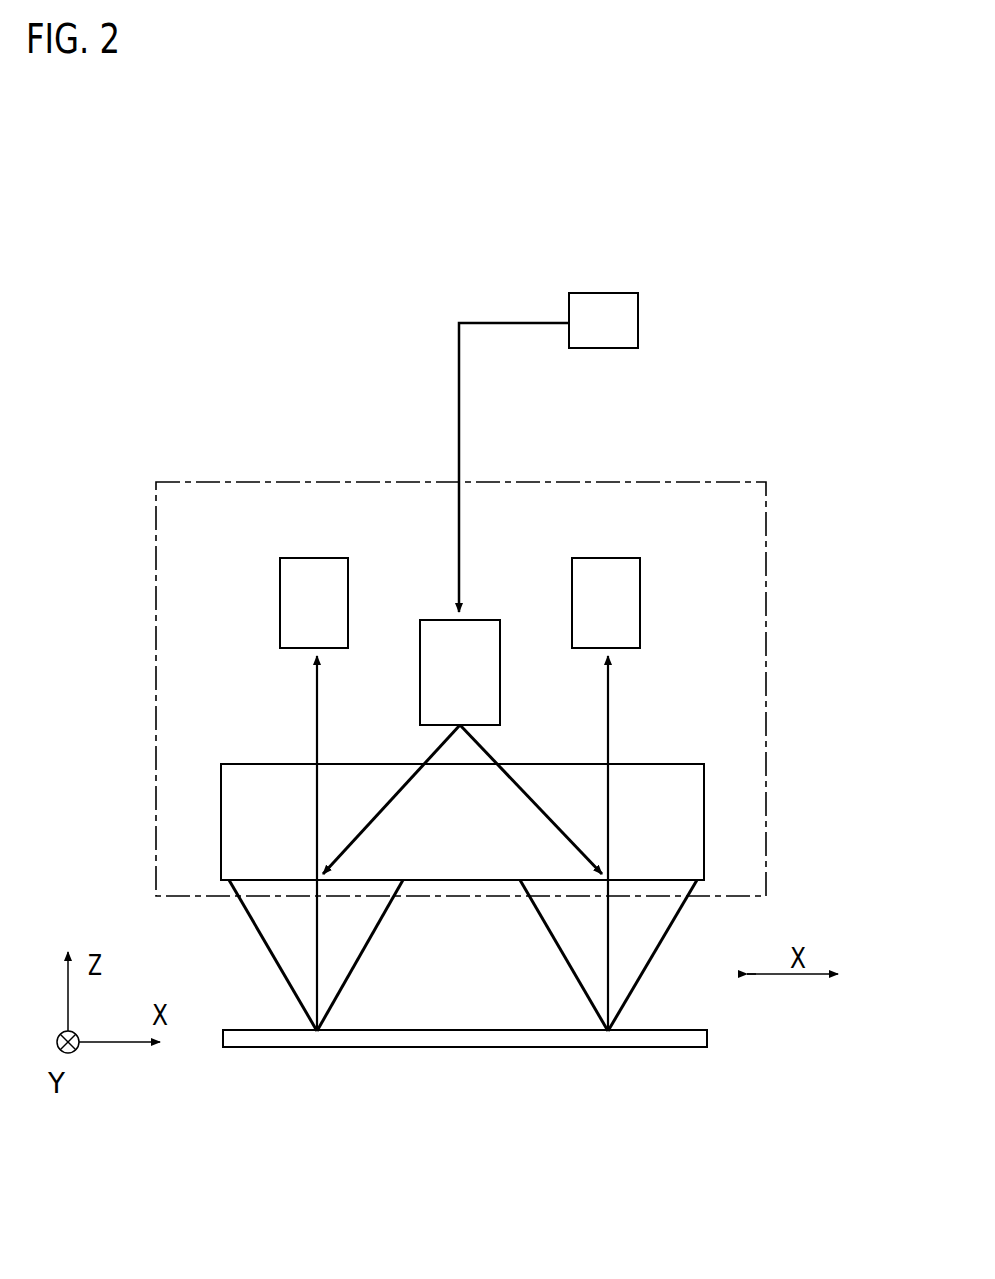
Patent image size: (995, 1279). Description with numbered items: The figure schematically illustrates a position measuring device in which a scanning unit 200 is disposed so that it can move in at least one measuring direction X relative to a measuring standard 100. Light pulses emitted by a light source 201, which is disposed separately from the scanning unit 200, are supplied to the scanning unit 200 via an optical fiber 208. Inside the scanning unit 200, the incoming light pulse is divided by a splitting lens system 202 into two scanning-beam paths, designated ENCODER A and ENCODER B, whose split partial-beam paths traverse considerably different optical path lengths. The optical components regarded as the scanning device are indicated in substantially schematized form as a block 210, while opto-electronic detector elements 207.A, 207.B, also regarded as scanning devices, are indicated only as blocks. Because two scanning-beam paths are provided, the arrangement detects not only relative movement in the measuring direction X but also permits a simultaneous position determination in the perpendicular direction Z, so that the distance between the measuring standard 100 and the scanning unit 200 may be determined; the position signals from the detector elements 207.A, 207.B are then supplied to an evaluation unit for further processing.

The measuring standard 100 is at (673, 1037).
The scanning unit 200 is at (780, 804).
The light source 201 is at (600, 313).
The splitting lens system 202 is at (433, 655).
The opto-electronic detector element 207.A is at (615, 607).
The opto-electronic detector element 207.B is at (305, 600).
The optical fiber 208 is at (488, 322).
The block 210 is at (643, 783).